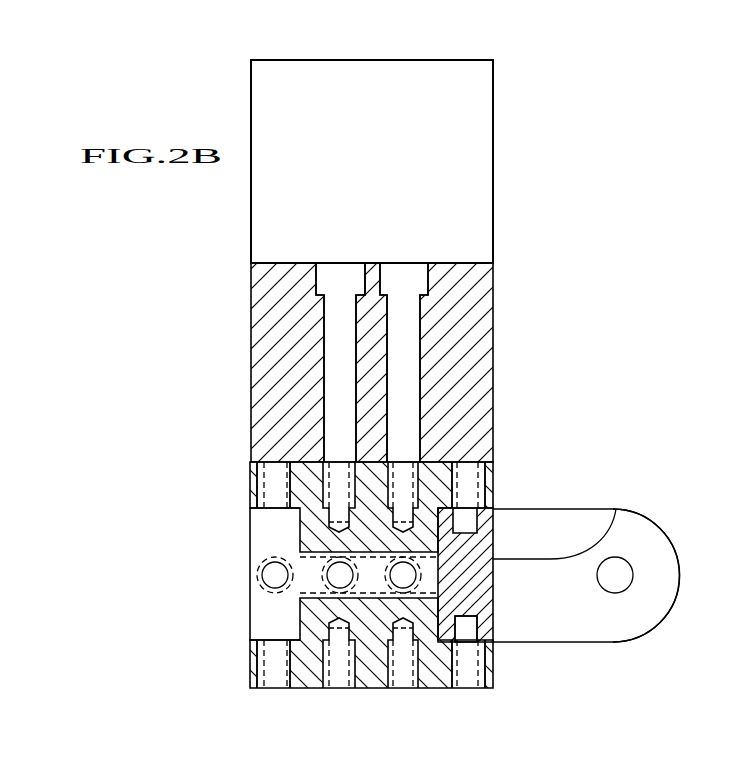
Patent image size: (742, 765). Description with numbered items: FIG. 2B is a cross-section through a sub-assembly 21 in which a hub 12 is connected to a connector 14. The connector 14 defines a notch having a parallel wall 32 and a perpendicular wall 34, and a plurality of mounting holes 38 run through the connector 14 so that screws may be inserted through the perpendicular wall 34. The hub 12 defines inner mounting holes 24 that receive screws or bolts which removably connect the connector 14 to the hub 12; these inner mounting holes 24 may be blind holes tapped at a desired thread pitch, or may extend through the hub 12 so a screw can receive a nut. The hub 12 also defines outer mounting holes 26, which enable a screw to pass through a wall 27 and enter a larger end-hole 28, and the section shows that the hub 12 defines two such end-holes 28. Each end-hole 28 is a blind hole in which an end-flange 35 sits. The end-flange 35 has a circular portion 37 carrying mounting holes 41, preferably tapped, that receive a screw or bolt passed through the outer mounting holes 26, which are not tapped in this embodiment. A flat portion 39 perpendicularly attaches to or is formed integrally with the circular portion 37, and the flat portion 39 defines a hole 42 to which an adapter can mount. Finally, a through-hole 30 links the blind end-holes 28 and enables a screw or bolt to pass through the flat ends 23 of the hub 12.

The sub-assembly 21 is at (566, 93).
The parallel wall 32 is at (386, 143).
The perpendicular wall 34 is at (473, 263).
The connector 14 is at (498, 275).
The mounting holes 38 is at (322, 326).
The inner mounting holes 24 is at (340, 460).
The outer mounting holes 26 is at (270, 462).
The hub 12 is at (498, 468).
The wall 27 is at (256, 470).
The end-hole 28 is at (300, 527).
The flat ends 23 is at (250, 552).
The through-hole 30 is at (423, 600).
The end-flange 35 is at (669, 527).
The circular portion 37 is at (616, 509).
The flat portion 39 is at (667, 587).
The mounting holes 41 is at (478, 628).
The hole 42 is at (615, 593).